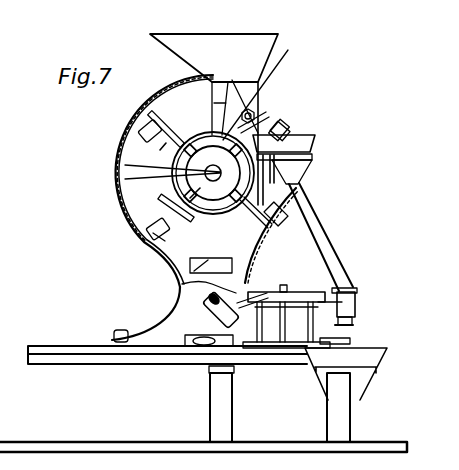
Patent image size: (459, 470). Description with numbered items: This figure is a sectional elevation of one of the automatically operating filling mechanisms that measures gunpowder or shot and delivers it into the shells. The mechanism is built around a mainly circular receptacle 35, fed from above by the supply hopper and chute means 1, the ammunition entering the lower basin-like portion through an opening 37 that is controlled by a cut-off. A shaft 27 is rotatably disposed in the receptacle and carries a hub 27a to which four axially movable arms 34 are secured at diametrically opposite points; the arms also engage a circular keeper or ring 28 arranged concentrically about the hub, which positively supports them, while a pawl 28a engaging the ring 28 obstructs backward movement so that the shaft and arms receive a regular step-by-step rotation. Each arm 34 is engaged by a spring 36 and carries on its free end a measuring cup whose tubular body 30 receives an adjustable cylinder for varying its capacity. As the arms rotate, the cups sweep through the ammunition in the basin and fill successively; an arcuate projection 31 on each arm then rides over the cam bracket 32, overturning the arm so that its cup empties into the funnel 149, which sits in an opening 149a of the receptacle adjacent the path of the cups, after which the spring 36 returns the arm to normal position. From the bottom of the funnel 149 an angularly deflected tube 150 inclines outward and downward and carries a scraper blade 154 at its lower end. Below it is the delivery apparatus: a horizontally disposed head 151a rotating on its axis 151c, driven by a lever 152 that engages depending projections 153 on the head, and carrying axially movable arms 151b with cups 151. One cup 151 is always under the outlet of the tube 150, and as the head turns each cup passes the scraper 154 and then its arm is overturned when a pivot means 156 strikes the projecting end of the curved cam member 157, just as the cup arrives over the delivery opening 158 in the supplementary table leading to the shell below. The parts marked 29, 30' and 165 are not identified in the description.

The supply hopper and chute means 1 is at (247, 5).
The shaft 27 is at (140, 176).
The hub 27a is at (173, 171).
The circular keeper or ring 28 is at (243, 126).
The pawl 28a is at (267, 89).
The guide block 29 is at (282, 122).
The tubular body 30 is at (236, 119).
The tooth block 30' is at (241, 189).
The arcuate projection 31 is at (172, 148).
The cam bracket 32 is at (291, 192).
The arms 34 is at (170, 132).
The receptacle 35 is at (140, 128).
The spring 36 is at (118, 172).
The opening 37 is at (180, 262).
The funnel 149 is at (312, 145).
The opening 149a is at (293, 171).
The angularly deflected tube 150 is at (303, 217).
The cups 151 is at (218, 292).
The rotatable head 151a is at (256, 297).
The axially movable arms 151b is at (353, 308).
The axis 151c is at (279, 284).
The lever 152 is at (330, 340).
The depending projections 153 is at (308, 305).
The scraper blade 154 is at (347, 288).
The pivot means 156 is at (257, 342).
The curved or cam member 157 is at (272, 345).
The delivery opening 158 is at (225, 347).
The stand 165 is at (363, 360).